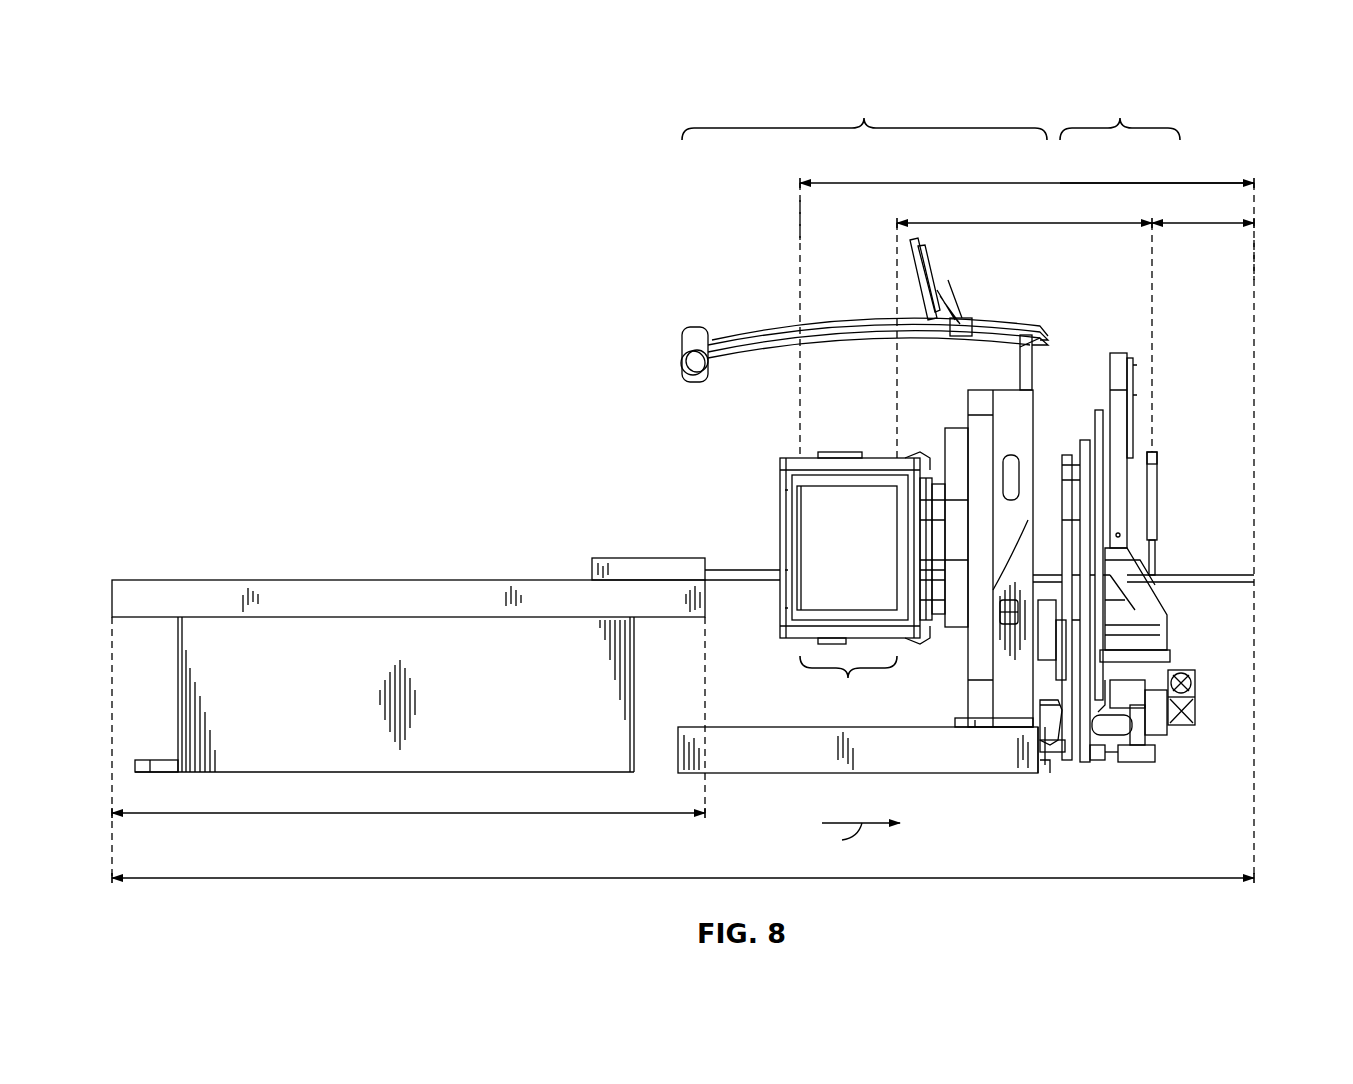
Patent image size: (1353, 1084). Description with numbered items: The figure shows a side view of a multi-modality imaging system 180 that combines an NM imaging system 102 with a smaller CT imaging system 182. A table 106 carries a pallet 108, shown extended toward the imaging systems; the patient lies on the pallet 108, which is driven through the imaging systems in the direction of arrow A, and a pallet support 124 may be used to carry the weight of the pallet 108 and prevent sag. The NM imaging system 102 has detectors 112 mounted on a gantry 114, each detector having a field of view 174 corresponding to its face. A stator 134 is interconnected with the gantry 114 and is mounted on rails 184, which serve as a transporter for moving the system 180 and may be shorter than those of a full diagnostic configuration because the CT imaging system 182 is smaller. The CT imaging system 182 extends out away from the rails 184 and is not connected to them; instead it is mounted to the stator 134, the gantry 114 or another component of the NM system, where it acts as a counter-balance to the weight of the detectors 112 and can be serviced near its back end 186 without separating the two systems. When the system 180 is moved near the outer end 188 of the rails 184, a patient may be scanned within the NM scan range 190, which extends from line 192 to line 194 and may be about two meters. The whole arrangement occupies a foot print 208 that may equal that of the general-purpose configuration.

The multi-modality imaging system 180 is at (546, 150).
The NM imaging system 102 is at (864, 112).
The CT imaging system 182 is at (1120, 112).
The table 106 is at (178, 578).
The pallet 108 is at (722, 568).
The detectors 112 is at (800, 457).
The gantry 114 is at (975, 390).
The pallet support 124 is at (1045, 597).
The stator 134 is at (1010, 706).
The field of view 174 is at (848, 680).
The rails 184 is at (803, 754).
The back end 186 is at (1174, 505).
The outer end 188 is at (1047, 775).
The NM scan range 190 is at (1062, 182).
The line 192 is at (797, 228).
The line 194 is at (1256, 258).
The foot print 208 is at (688, 876).